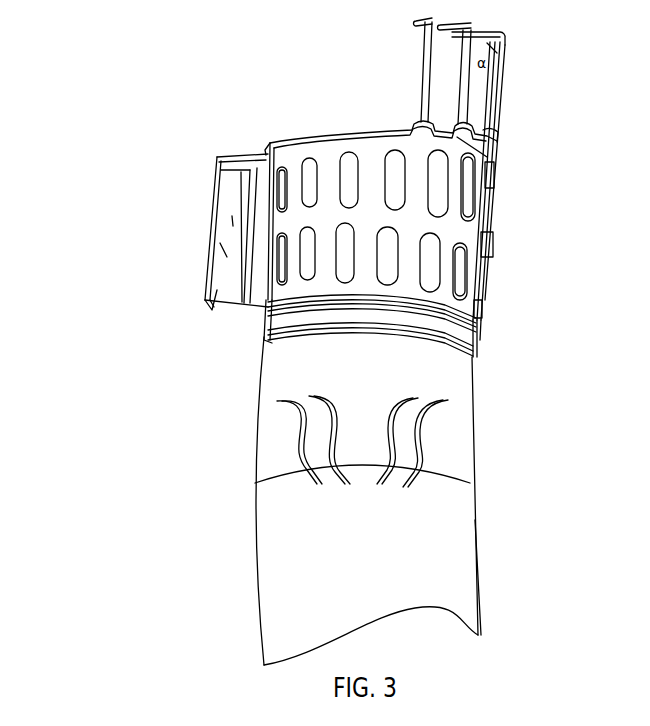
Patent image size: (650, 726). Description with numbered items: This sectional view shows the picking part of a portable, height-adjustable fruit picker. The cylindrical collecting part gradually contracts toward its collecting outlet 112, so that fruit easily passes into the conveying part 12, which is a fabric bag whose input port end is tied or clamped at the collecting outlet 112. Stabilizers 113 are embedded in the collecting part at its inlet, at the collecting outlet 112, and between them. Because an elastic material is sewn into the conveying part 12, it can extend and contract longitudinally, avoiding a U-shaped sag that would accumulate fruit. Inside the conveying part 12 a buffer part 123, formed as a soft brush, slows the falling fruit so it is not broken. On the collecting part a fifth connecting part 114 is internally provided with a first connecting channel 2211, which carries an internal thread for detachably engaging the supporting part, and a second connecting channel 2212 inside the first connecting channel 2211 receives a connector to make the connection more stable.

The conveying part 12 is at (474, 524).
The collecting outlet 112 is at (475, 327).
The stabilizers 113 is at (480, 318).
The fifth connecting part 114 is at (212, 305).
The buffer part 123 is at (422, 453).
The first connecting channel 2211 is at (228, 258).
The second connecting channel 2212 is at (232, 222).